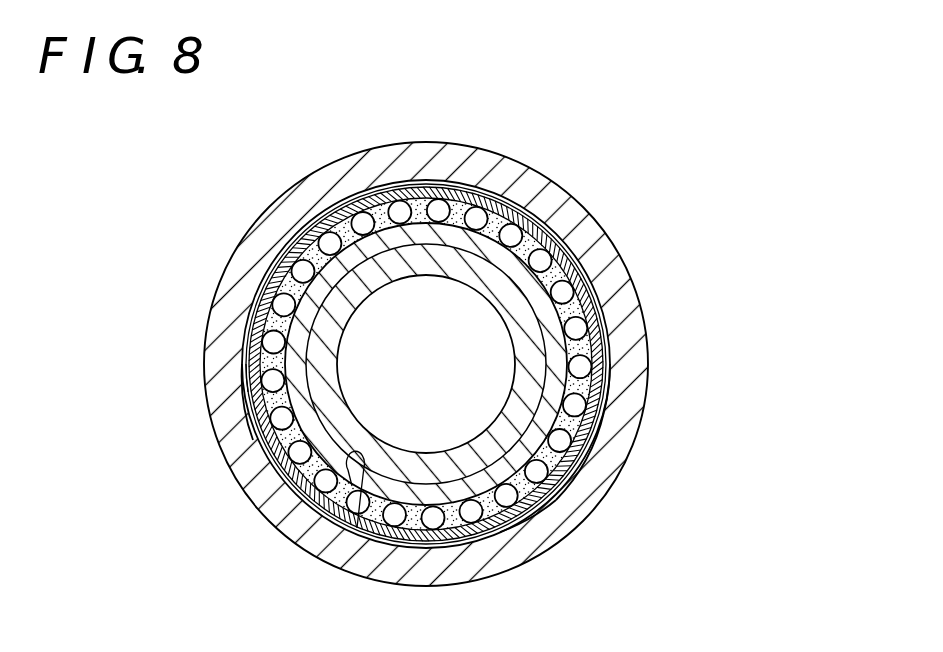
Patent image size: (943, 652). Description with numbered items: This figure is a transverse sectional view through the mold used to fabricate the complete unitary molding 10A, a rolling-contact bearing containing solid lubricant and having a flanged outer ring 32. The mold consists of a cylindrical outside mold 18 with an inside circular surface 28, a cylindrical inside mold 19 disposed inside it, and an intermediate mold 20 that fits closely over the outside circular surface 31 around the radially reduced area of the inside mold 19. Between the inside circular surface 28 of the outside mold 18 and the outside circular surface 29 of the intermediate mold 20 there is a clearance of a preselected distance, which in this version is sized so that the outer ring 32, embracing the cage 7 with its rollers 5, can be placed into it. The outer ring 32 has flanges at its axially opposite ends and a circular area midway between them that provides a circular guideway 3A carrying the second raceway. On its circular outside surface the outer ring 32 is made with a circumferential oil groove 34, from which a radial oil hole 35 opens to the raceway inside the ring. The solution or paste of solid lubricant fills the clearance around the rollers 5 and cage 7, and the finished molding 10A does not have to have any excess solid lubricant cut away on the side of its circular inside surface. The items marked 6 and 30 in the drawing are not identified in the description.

The circular guideway 3A is at (360, 202).
The rollers 5 is at (579, 362).
The retainer pocket 6 is at (586, 222).
The cage 7 is at (262, 277).
The complete unitary molding 10A is at (595, 382).
The outside mold 18 is at (630, 355).
The inside mold 19 is at (325, 358).
The intermediate mold 20 is at (545, 502).
The inside circular surface 28 is at (277, 522).
The outside circular surface 29 is at (457, 547).
The lubricant passage 30 is at (357, 528).
The outside circular surface 31 is at (268, 442).
The flanged outer ring 32 is at (586, 466).
The oil groove 34 is at (598, 430).
The radial oil hole 35 is at (243, 363).